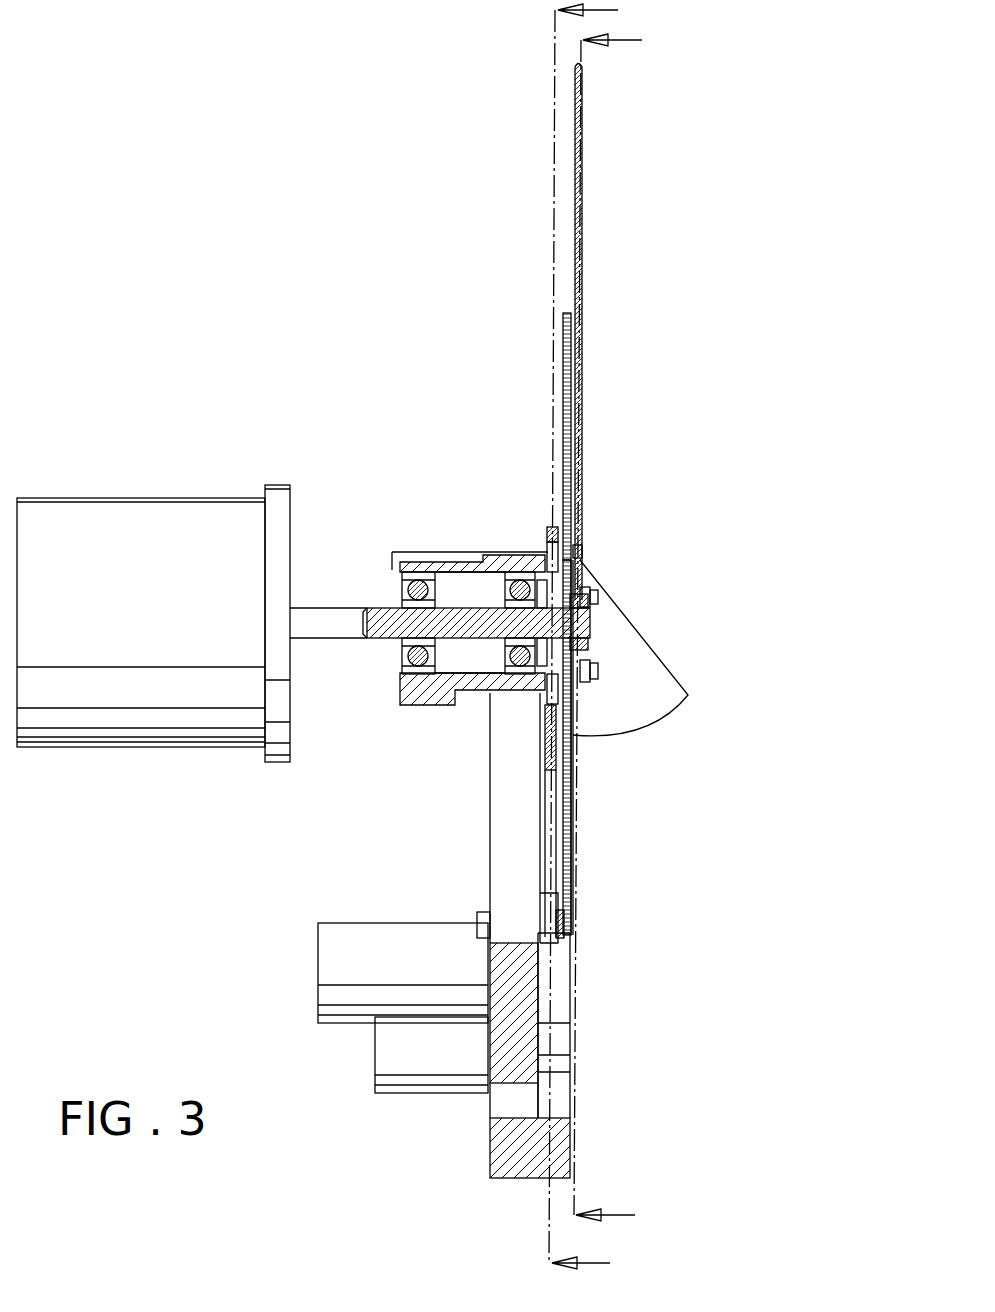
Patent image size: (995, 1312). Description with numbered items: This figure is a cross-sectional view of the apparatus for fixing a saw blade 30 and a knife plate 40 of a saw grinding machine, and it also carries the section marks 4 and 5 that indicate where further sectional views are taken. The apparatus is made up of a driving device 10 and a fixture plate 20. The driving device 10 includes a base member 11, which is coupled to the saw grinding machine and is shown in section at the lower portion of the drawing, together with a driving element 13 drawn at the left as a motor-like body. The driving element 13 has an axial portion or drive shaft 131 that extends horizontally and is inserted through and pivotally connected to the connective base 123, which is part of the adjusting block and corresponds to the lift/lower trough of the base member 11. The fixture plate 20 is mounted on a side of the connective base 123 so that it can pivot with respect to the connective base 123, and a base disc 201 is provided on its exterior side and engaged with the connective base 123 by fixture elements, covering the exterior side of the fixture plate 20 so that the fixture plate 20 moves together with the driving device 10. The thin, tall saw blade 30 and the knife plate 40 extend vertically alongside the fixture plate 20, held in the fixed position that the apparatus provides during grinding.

The section line 4- 4 is at (599, 643).
The section line 5- 5 is at (623, 631).
The driving device 10 is at (390, 472).
The base member 11 is at (497, 1140).
The driving element 13 is at (133, 528).
The drive shaft 131 is at (396, 608).
The connective base 123 is at (518, 553).
The fixture plate 20 is at (573, 745).
The base disc 201 is at (582, 552).
The saw blade 30 is at (571, 414).
The knife plate 40 is at (584, 237).